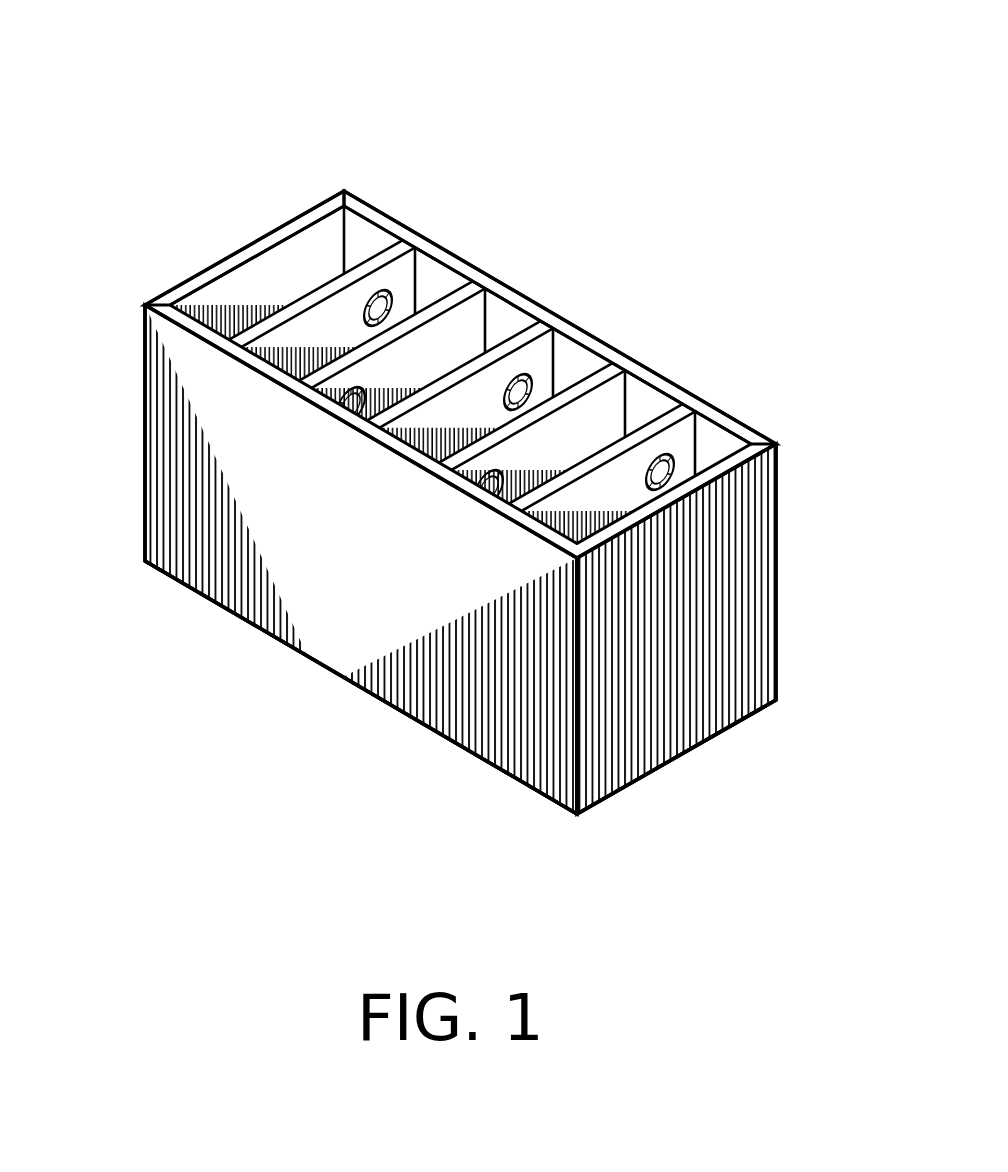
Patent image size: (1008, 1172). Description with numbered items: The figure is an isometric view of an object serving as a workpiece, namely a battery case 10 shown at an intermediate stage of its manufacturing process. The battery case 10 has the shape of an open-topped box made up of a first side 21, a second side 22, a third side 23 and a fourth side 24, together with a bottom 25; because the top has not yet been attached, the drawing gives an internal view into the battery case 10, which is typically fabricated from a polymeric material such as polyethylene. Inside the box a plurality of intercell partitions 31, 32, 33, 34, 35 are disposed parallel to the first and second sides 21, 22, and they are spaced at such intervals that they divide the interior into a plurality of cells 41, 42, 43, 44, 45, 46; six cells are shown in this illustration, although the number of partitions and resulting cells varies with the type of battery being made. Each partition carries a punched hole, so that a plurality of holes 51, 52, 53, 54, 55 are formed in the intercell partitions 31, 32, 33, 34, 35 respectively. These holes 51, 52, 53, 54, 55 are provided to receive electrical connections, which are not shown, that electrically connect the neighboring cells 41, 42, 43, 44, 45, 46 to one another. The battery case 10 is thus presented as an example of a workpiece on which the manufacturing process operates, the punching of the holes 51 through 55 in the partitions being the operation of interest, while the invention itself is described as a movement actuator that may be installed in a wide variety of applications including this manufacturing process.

The battery case 10 is at (778, 518).
The first side 21 is at (240, 250).
The second side 22 is at (710, 623).
The third side 23 is at (355, 572).
The fourth side 24 is at (762, 433).
The bottom 25 is at (437, 733).
The intercell partition 31 is at (378, 260).
The intercell partition 32 is at (442, 295).
The intercell partition 33 is at (515, 315).
The intercell partition 34 is at (592, 362).
The intercell partition 35 is at (672, 385).
The cell 41 is at (340, 188).
The cell 42 is at (423, 262).
The cell 43 is at (487, 292).
The cell 44 is at (548, 320).
The cell 45 is at (640, 372).
The cell 46 is at (703, 405).
The hole 51 is at (366, 297).
The hole 52 is at (340, 405).
The hole 53 is at (505, 393).
The hole 54 is at (485, 495).
The hole 55 is at (652, 482).